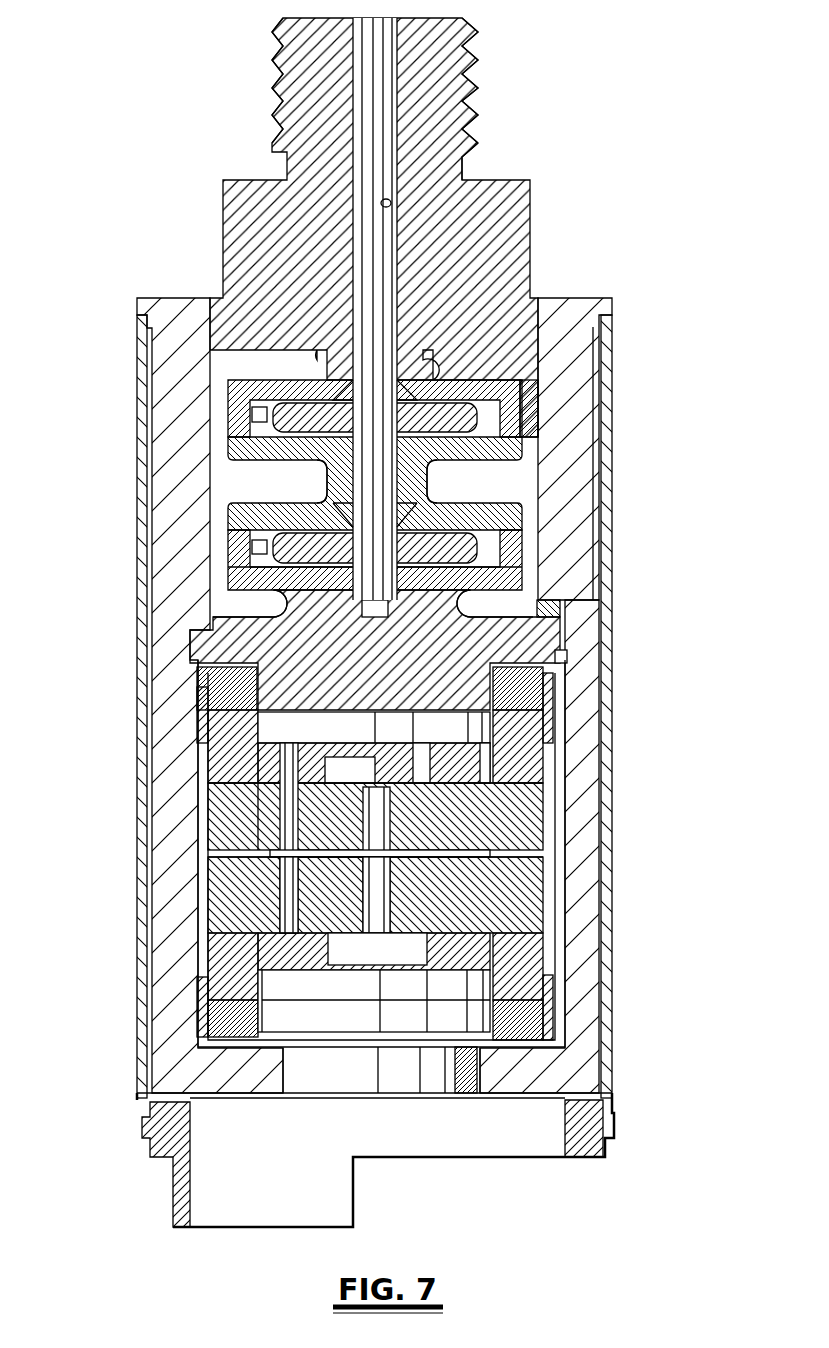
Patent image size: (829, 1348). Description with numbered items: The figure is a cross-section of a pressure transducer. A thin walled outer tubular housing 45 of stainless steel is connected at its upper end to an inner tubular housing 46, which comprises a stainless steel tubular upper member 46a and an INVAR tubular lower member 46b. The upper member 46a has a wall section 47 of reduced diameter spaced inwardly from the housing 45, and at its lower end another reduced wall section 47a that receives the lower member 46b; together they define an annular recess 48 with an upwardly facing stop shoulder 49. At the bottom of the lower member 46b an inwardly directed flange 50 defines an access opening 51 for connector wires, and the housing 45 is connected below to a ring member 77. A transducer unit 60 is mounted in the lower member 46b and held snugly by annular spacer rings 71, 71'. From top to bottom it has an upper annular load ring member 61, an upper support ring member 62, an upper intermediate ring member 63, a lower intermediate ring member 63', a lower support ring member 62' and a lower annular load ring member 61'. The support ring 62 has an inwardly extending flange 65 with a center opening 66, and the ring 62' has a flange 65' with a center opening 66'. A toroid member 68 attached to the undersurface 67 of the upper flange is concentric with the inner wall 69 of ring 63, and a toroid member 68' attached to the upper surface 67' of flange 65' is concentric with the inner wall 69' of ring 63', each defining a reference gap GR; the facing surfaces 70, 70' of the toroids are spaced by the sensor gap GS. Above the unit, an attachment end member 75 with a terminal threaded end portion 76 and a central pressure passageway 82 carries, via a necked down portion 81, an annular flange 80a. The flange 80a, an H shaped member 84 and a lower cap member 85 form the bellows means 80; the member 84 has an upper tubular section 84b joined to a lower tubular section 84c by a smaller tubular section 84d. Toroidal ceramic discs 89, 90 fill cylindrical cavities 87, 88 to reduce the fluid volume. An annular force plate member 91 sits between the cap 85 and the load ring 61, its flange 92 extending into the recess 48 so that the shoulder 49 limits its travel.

The attachment end member 75 is at (443, 68).
The terminal threaded end portion 76 is at (455, 148).
The pressure passageway 82 is at (392, 205).
The necked down portion 81 is at (530, 292).
The toroidally shaped ceramic disc 89 is at (292, 408).
The cylindrical cavity 87 is at (262, 428).
The bellows means 80 is at (284, 476).
The tubular section of smaller diameter 84d is at (315, 491).
The cylindrical cavity 88 is at (262, 538).
The toroidally shaped ceramic disc 90 is at (290, 553).
The annular flange 80a is at (517, 385).
The inner tubular housing 46 is at (575, 389).
The upper tubular section 84b is at (523, 440).
The H shaped member 84 is at (423, 483).
The tubular upper member 46a is at (578, 511).
The wall section of reduced diameter 47 is at (523, 550).
The lower tubular section 84c is at (525, 557).
The lower cap member 85 is at (523, 573).
The wall section of reduced diameter 47a is at (573, 605).
The annular recess 48 is at (558, 628).
The stop shoulder 49 is at (555, 657).
The outer tubular housing 45 is at (613, 690).
The annular spacer ring 71 is at (608, 708).
The upper annular load ring member 61 is at (588, 710).
The upper support ring member 62 is at (443, 746).
The upper intermediate ring member 63 is at (443, 816).
The tubular lower member 46b is at (572, 842).
The transducer unit 60 is at (560, 887).
The lower intermediate ring member 63' is at (446, 912).
The lower support ring member 62' is at (440, 985).
The lower annular load ring member 61' is at (446, 1020).
The annular spacer ring 71' is at (613, 1017).
The ring member 77 is at (607, 1127).
The access opening 51 is at (472, 1068).
The inwardly directed flange 50 is at (513, 1085).
The flange 92 is at (215, 647).
The annular force plate member 91 is at (250, 690).
The reference gap GR is at (245, 797).
The inner wall 69 is at (287, 865).
The inner wall 69' is at (314, 880).
The undersurface 67 is at (374, 742).
The center opening 66 is at (403, 744).
The inwardly extending flange 65 is at (451, 736).
The toroid member 68 is at (374, 778).
The facing surface 70 is at (335, 838).
The sensor gap GS is at (330, 990).
The toroid member 68' is at (374, 983).
The upper surface 67' is at (397, 984).
The center opening 66' is at (432, 973).
The inwardly extending flange 65' is at (470, 995).
The facing surface 70' is at (374, 951).